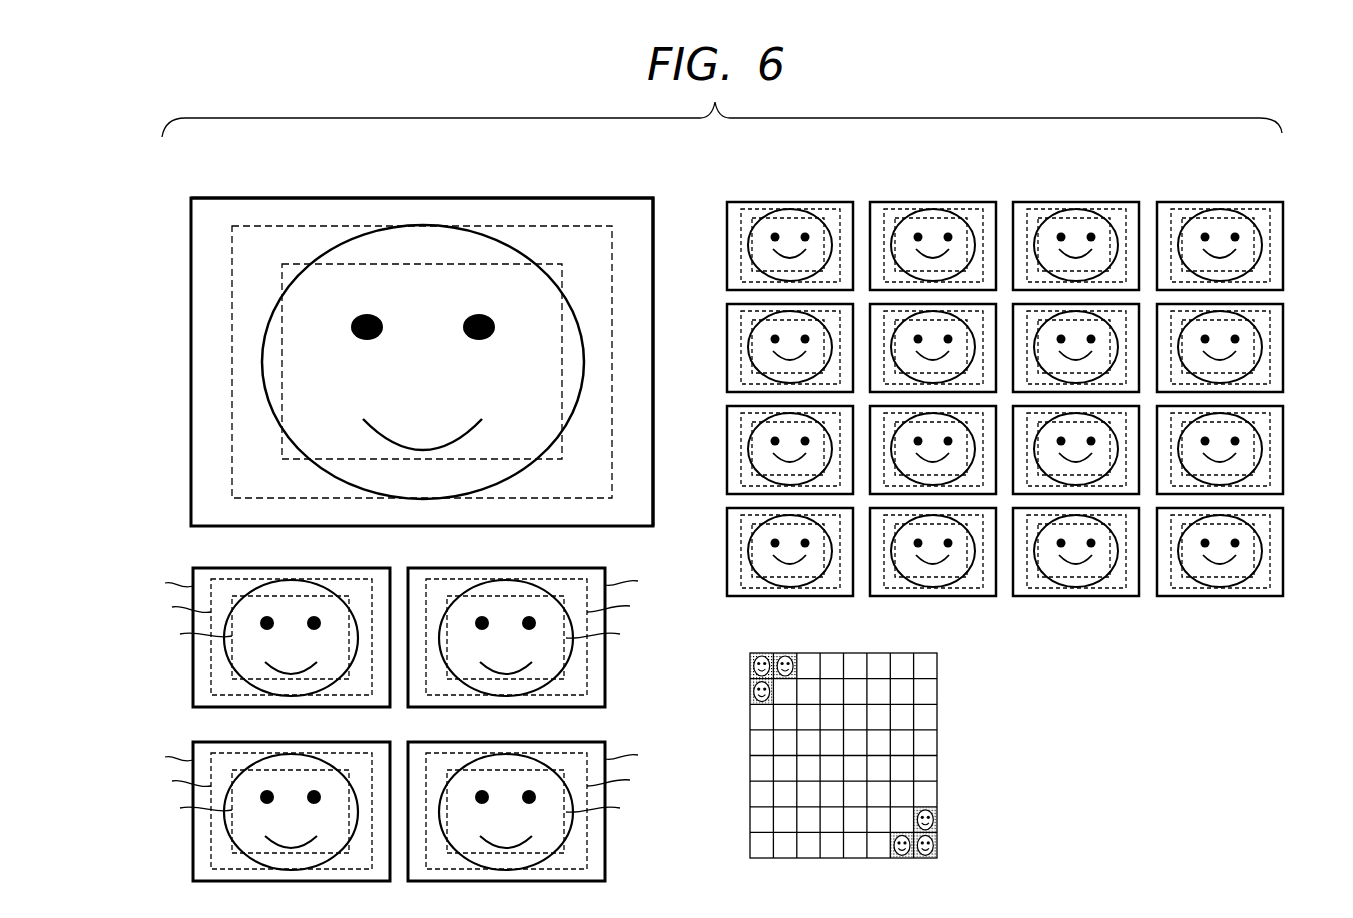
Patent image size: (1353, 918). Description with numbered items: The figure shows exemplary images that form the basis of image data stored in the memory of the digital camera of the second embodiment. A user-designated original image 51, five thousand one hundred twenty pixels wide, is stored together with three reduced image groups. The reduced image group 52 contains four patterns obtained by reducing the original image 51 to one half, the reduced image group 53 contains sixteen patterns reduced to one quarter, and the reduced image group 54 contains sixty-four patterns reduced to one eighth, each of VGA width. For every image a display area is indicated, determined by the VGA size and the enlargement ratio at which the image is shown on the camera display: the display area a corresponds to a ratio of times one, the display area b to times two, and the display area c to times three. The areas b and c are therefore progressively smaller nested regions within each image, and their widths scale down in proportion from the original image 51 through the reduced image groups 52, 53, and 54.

The original image 51 is at (439, 338).
The reduced image group 52 is at (662, 878).
The reduced image group 53 is at (1282, 612).
The reduced image group 54 is at (937, 738).
The display area a is at (654, 237).
The display area b is at (612, 264).
The display area c is at (562, 287).